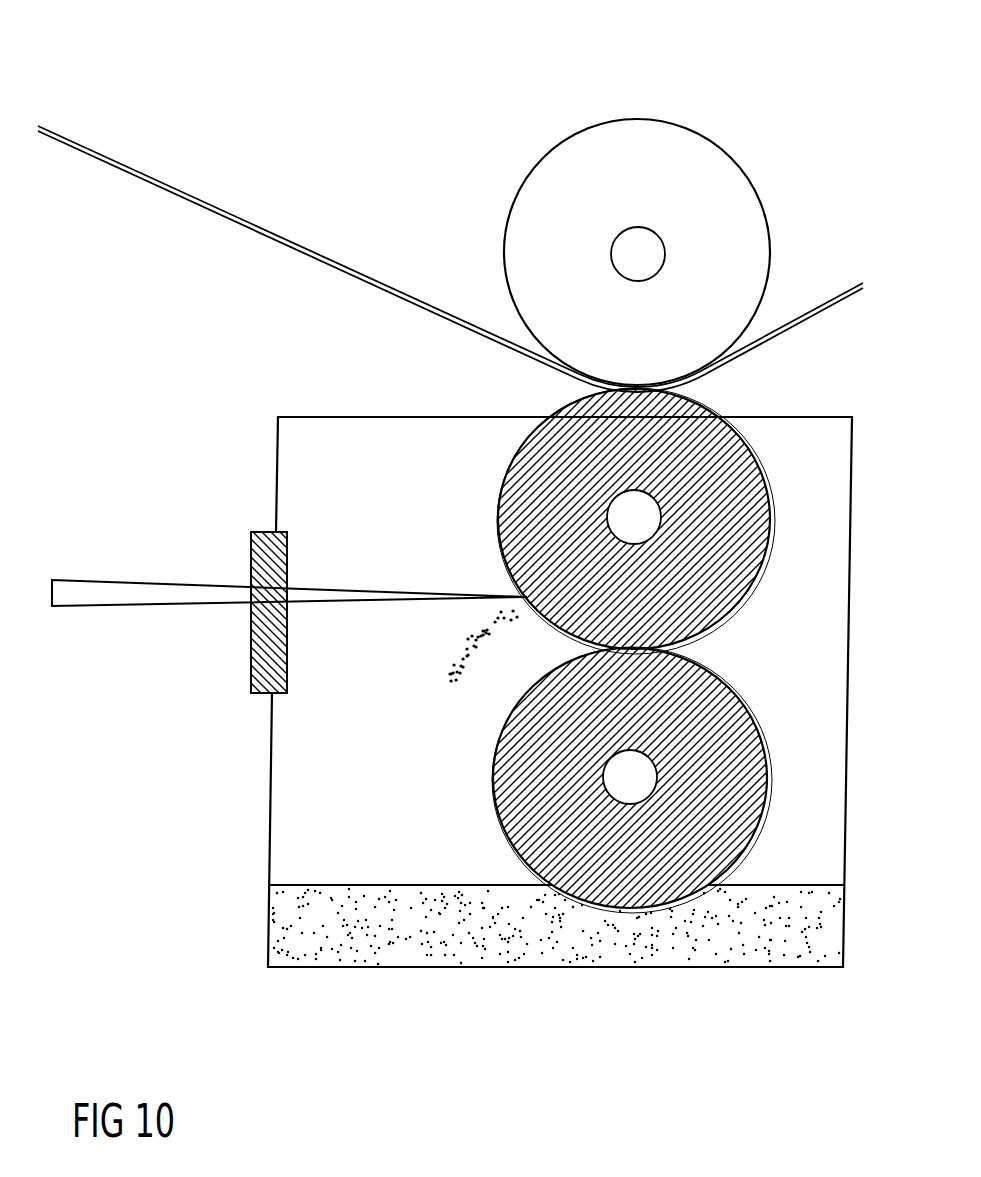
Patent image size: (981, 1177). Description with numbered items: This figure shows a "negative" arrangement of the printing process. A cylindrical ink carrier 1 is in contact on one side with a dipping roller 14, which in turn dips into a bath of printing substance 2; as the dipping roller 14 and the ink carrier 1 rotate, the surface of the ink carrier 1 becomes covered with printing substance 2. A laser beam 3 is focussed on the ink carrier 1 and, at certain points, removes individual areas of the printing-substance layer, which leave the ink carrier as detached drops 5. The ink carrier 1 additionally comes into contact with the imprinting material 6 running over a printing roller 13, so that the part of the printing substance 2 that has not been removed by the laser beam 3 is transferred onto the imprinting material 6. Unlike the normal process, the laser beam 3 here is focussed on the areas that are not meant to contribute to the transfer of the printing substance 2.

The ink carrier 1 is at (747, 527).
The printing substance 2 is at (798, 915).
The laser beam 3 is at (167, 593).
The drop 5 is at (470, 657).
The imprinting material 6 is at (230, 217).
The printing roller 13 is at (676, 138).
The dipping roller 14 is at (740, 827).